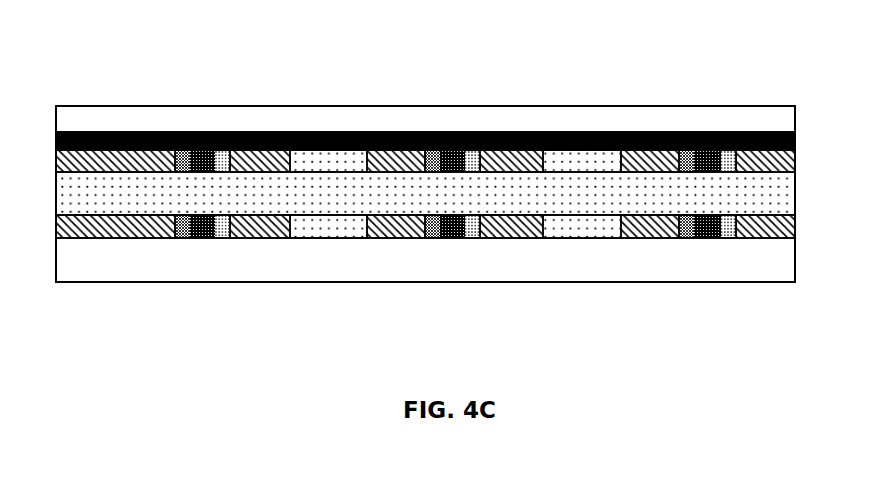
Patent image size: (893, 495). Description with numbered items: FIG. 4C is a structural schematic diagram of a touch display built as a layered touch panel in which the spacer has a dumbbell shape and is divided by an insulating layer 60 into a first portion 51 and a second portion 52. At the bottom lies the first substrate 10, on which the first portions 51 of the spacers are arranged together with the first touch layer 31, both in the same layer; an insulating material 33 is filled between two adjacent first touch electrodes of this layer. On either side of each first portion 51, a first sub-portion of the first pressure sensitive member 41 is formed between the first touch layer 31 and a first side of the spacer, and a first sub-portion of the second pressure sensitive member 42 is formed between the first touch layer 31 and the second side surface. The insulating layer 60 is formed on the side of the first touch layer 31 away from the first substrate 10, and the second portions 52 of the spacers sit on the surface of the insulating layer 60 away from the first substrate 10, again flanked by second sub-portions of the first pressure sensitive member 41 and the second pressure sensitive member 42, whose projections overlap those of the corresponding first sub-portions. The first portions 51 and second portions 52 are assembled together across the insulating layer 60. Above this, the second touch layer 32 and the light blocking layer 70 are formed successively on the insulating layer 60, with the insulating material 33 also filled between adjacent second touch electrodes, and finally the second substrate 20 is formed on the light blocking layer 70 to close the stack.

The first substrate 10 is at (658, 272).
The second substrate 20 is at (632, 123).
The light blocking layer 70 is at (794, 138).
The insulating layer 60 is at (390, 192).
The insulating material 33 is at (572, 163).
The first touch layer 31 is at (280, 223).
The second touch layer 32 is at (280, 165).
The first portion of the spacer 51 is at (185, 172).
The second pressure sensitive member 42 is at (177, 238).
The second portion of the spacer 52 is at (203, 238).
The first pressure sensitive member 41 is at (230, 226).